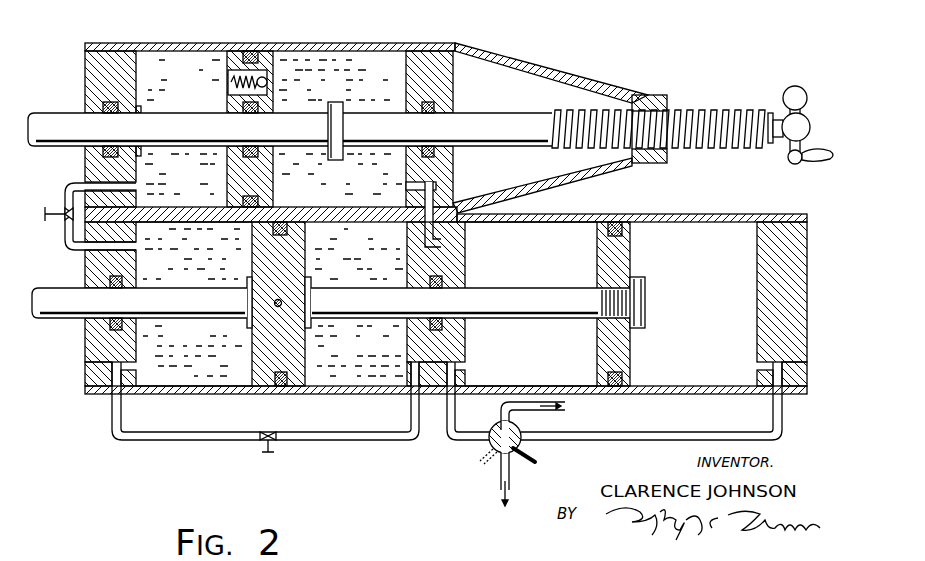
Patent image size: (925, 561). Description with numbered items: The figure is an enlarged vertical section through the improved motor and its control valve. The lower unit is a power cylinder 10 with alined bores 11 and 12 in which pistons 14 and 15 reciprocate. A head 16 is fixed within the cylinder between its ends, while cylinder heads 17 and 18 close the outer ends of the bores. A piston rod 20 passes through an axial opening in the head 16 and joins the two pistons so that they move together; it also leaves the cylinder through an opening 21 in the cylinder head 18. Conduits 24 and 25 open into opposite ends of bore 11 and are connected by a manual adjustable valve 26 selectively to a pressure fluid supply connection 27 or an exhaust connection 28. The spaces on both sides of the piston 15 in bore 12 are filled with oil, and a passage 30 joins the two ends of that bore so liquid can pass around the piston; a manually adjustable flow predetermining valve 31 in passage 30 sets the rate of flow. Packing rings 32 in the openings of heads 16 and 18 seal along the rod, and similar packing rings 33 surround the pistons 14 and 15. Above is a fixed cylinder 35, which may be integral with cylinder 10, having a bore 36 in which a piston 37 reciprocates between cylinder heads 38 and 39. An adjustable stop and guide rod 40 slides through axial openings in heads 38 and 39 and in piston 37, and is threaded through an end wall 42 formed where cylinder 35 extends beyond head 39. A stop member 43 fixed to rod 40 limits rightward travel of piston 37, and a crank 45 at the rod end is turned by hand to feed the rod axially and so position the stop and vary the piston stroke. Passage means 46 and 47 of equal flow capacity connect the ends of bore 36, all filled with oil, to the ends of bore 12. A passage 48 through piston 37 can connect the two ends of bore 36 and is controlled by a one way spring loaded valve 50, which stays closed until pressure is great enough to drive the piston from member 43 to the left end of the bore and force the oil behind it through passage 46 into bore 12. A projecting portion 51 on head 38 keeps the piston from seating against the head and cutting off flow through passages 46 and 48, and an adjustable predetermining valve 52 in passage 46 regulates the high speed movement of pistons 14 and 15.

The power cylinder 10 is at (688, 214).
The bore 11 is at (522, 226).
The bore 12 is at (155, 387).
The piston 14 is at (632, 258).
The piston 15 is at (305, 371).
The head 16 is at (467, 350).
The cylinder head 17 is at (757, 279).
The cylinder head 18 is at (86, 336).
The piston rod 20 is at (478, 302).
The opening 21 is at (85, 290).
The conduit 24 is at (452, 441).
The conduit 25 is at (666, 432).
The adjustable valve 26 is at (494, 423).
The pressure fluid supply connection 27 is at (532, 410).
The exhaust connection 28 is at (497, 480).
The passage 30 is at (150, 441).
The flow predetermining valve 31 is at (268, 431).
The packing ring 32 is at (115, 288).
The packing ring 33 is at (612, 222).
The fixed cylinder 35 is at (190, 43).
The bore 36 is at (320, 57).
The piston 37 is at (227, 165).
The cylinder head 38 is at (85, 66).
The cylinder head 39 is at (454, 78).
The adjustable stop and guide rod 40 is at (500, 147).
The end wall 42 is at (640, 95).
The stop member 43 is at (337, 101).
The crank 45 is at (792, 166).
The passage means 46 is at (68, 184).
The passage means 47 is at (431, 196).
The passage 48 is at (273, 83).
The one way spring loaded valve 50 is at (268, 72).
The projecting portion 51 is at (140, 107).
The adjustable predetermining valve 52 is at (63, 220).